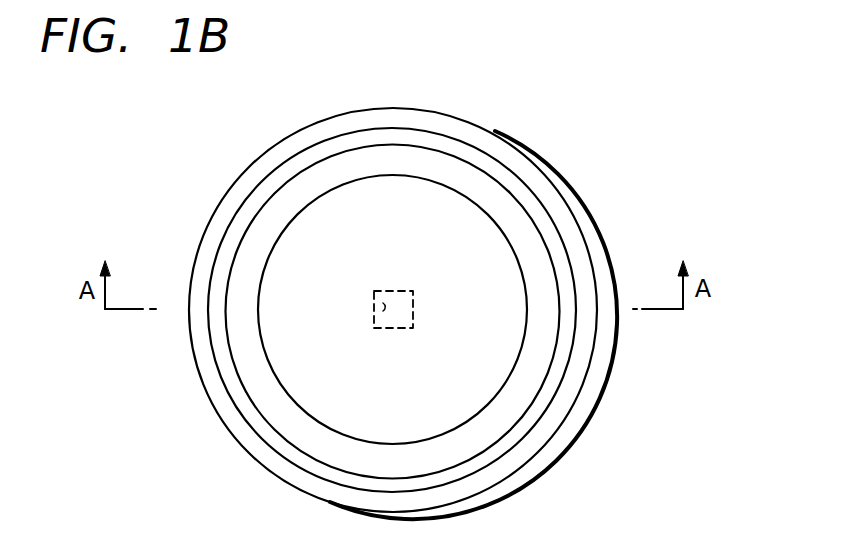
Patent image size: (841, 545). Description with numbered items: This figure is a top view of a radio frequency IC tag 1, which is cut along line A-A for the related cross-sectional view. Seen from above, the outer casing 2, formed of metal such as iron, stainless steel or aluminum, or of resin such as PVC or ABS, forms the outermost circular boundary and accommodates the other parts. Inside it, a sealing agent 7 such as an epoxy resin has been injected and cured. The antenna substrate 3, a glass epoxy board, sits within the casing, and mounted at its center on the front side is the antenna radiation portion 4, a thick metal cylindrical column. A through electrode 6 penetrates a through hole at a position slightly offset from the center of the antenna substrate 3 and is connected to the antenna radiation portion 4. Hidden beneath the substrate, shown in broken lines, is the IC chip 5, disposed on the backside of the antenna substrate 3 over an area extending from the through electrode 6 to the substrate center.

The radio frequency IC tag 1 is at (186, 156).
The outer casing 2 is at (506, 153).
The antenna substrate 3 is at (512, 405).
The antenna radiation portion 4 is at (495, 343).
The IC chip 5 is at (398, 300).
The through electrode 6 is at (381, 310).
The sealing agent 7 is at (530, 200).